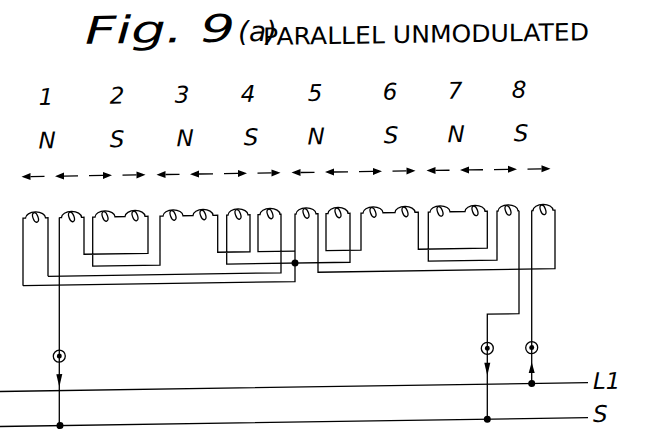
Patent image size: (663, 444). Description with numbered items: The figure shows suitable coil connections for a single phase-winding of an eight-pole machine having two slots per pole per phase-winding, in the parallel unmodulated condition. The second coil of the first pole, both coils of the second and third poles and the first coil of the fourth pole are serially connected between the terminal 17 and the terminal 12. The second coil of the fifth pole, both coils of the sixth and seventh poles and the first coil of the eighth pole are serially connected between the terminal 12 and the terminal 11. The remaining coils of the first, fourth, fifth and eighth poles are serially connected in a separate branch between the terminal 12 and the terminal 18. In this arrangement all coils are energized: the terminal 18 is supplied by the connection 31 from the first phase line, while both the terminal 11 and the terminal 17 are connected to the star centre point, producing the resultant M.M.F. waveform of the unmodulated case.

The terminal 11 is at (481, 356).
The terminal 12 is at (295, 268).
The terminal 17 is at (66, 357).
The terminal 18 is at (538, 356).
The connection 31 is at (533, 389).